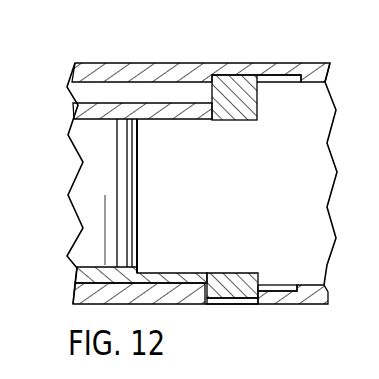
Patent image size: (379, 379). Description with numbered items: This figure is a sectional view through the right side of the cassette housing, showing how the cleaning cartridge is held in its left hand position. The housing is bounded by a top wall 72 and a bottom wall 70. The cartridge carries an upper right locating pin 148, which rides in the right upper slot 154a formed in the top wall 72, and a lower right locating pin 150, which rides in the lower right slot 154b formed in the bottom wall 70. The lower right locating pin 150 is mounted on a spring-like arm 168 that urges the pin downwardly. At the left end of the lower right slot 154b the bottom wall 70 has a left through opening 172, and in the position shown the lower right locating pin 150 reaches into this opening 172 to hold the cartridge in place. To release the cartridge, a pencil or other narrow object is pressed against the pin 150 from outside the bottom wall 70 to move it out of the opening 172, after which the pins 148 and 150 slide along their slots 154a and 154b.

The bottom wall 70 is at (77, 292).
The top wall 72 is at (124, 70).
The upper right locating pin 148 is at (229, 78).
The lower right locating pin 150 is at (233, 297).
The right upper slot 154a is at (278, 83).
The lower right slot 154b is at (268, 288).
The spring-like arm 168 is at (168, 273).
The left through opening 172 is at (210, 298).